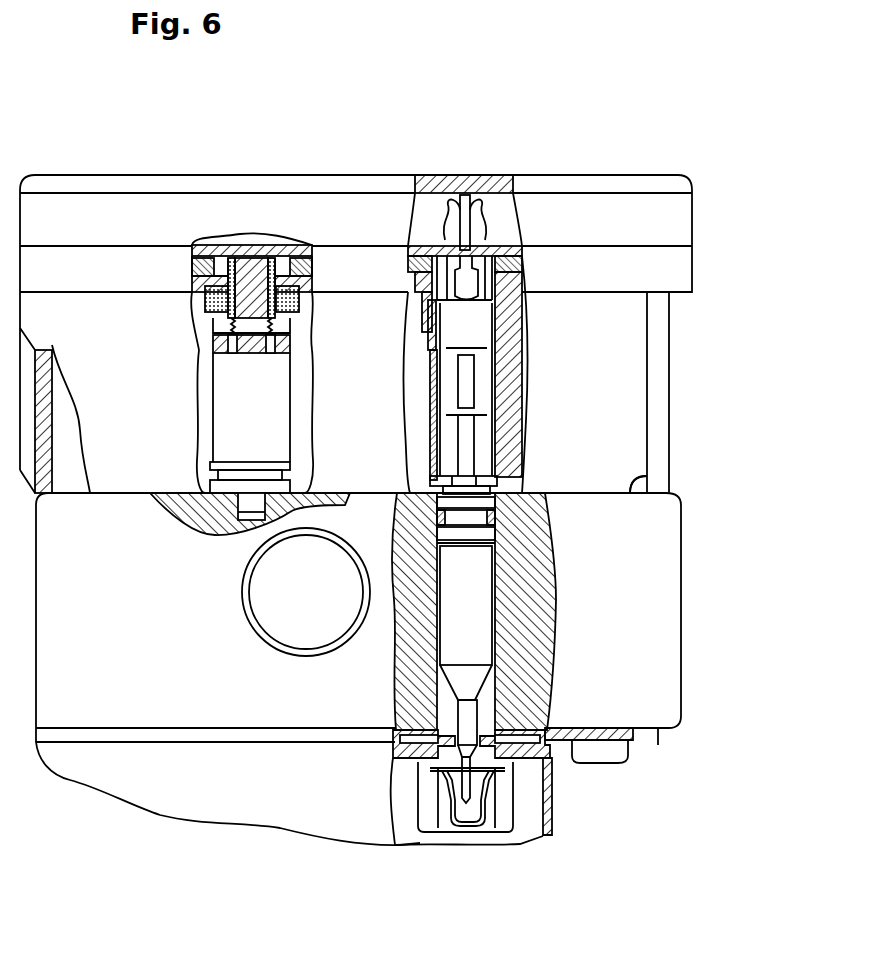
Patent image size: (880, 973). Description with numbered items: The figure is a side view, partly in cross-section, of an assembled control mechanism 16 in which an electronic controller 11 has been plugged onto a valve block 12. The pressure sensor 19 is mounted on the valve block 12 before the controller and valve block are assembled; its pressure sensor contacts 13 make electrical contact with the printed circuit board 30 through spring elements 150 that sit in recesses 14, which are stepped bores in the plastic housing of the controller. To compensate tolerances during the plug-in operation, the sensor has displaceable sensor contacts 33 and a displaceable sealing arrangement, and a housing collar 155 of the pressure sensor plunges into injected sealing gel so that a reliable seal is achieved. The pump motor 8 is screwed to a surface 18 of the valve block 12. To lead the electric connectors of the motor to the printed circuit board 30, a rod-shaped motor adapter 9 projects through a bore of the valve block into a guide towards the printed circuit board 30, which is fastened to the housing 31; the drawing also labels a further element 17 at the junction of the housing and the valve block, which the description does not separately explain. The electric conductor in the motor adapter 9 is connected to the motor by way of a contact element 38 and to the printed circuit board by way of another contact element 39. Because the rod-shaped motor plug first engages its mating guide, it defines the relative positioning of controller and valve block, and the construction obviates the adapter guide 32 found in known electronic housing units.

The pump motor 8 is at (548, 810).
The motor adapter 9 is at (470, 600).
The electronic controller 11 is at (692, 262).
The valve block 12 is at (655, 672).
The pressure sensor contacts 13 is at (290, 322).
The recesses 14 is at (200, 268).
The control mechanism 16 is at (683, 369).
The web 17 is at (640, 468).
The surface of the valve block 18 is at (658, 745).
The pressure sensor 19 is at (265, 425).
The printed circuit board 30 is at (305, 244).
The housing 31 is at (660, 408).
The adapter guide 32 is at (432, 457).
The displaceable sensor contacts 33 is at (200, 346).
The contact element 38 is at (465, 805).
The contact element 39 is at (466, 224).
The spring elements 150 is at (300, 262).
The housing collar 155 is at (210, 312).